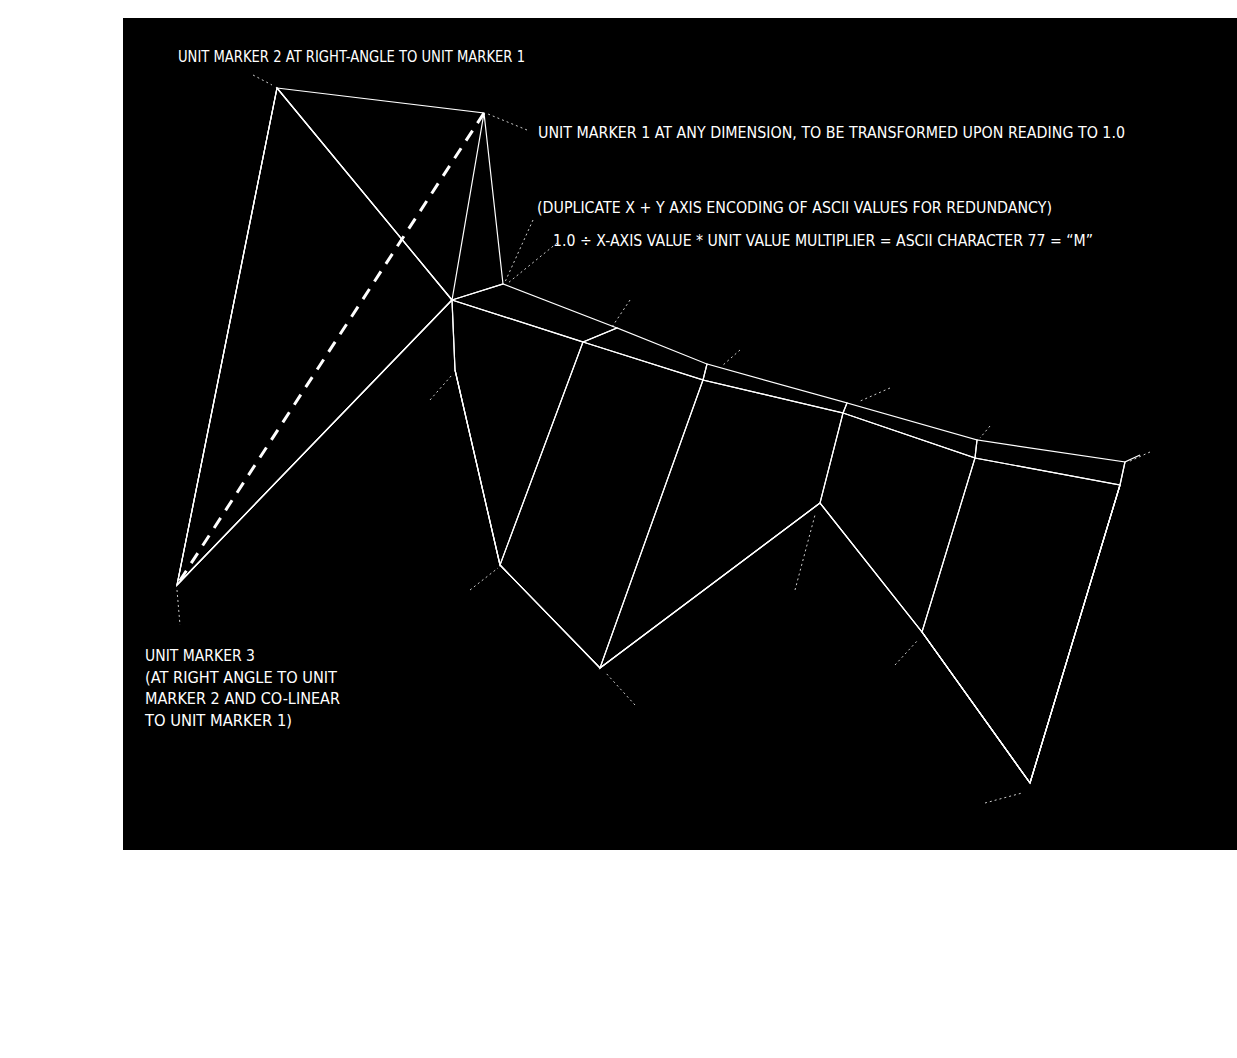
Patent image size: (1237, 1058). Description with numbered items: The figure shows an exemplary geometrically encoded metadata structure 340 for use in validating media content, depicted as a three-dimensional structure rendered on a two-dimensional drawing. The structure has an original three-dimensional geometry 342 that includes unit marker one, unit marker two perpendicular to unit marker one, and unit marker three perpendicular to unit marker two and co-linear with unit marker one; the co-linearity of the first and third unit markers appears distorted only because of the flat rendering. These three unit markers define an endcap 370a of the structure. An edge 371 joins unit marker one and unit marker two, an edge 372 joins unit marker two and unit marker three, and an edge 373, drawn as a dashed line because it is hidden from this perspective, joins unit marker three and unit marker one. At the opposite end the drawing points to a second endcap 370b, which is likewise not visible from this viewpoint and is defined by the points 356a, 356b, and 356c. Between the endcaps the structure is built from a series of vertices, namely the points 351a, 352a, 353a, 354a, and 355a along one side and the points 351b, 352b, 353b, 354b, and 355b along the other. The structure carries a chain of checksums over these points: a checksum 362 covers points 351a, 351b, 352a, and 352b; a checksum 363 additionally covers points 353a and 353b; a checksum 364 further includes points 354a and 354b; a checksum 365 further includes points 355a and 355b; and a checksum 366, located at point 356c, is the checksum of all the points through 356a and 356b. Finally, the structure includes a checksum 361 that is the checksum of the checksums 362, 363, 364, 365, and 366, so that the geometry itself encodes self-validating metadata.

The geometrically encoded metadata structure 340 is at (1168, 137).
The original 3D geometry 342 is at (236, 158).
The point 351a is at (504, 294).
The point 351b is at (458, 305).
The point 352a is at (614, 321).
The point 352b is at (585, 347).
The point 353a is at (736, 364).
The point 353b is at (706, 386).
The point 354a is at (856, 398).
The point 354b is at (846, 418).
The point 355a is at (986, 438).
The point 355b is at (978, 463).
The point 356a is at (1124, 457).
The point 356b is at (1118, 490).
The point 356c is at (1032, 790).
The checksum of checksums 361 is at (456, 372).
The checksum 362 is at (500, 563).
The checksum 363 is at (600, 666).
The checksum 364 is at (820, 503).
The checksum 365 is at (922, 632).
The checksum 366 is at (1030, 780).
The endcap 370a is at (330, 252).
The endcap 370b is at (1080, 622).
The edge 371 is at (430, 108).
The edge 372 is at (232, 280).
The edge 373 is at (340, 334).